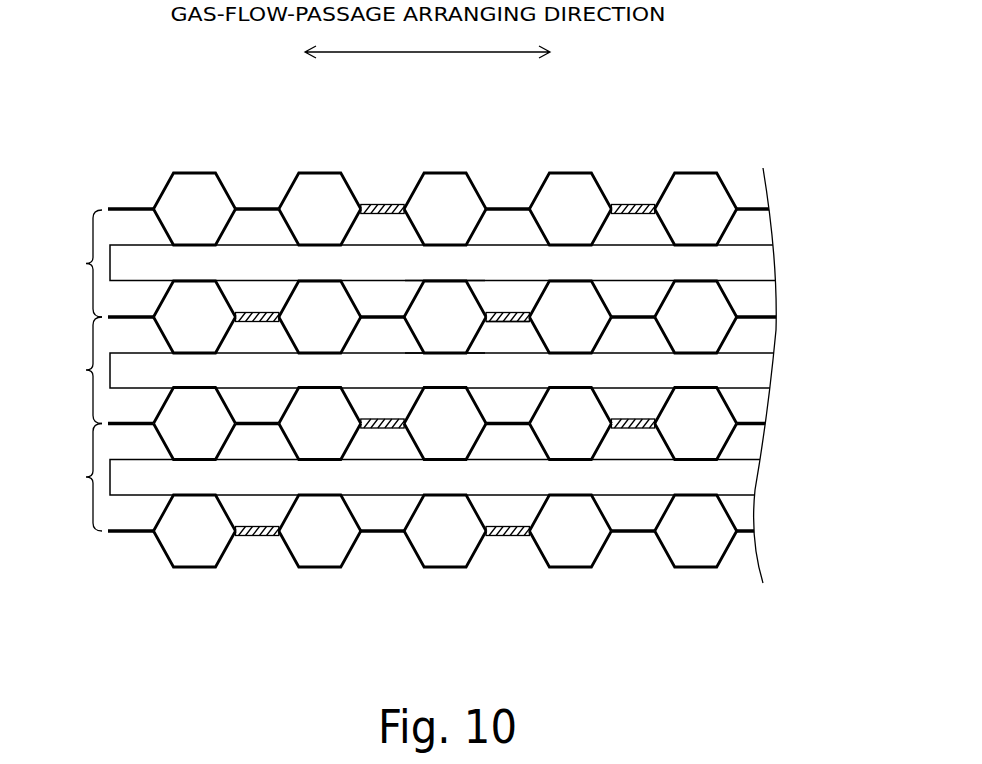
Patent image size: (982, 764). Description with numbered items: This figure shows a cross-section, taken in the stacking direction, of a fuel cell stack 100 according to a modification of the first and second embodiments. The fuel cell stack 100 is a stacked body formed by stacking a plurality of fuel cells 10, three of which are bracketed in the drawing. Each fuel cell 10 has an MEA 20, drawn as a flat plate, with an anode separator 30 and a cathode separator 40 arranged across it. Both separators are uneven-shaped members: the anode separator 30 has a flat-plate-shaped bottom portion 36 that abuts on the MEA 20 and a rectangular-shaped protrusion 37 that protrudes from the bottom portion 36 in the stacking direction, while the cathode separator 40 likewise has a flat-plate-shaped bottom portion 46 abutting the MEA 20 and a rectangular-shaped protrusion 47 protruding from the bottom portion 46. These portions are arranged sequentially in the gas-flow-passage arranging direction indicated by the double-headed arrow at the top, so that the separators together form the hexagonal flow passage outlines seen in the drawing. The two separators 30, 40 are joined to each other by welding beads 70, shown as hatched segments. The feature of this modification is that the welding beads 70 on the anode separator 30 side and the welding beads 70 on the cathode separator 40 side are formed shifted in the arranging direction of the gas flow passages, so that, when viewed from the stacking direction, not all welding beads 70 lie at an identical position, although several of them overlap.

The fuel cell stack 100 is at (86, 121).
The fuel cell 10 is at (81, 370).
The MEA 20 is at (763, 265).
The anode separator 30 is at (753, 304).
The cathode separator 40 is at (752, 338).
The bottom portion 36 is at (445, 280).
The protrusion 37 is at (385, 313).
The bottom portion 46 is at (443, 354).
The protrusion 47 is at (510, 322).
The welding bead 70 is at (250, 312).